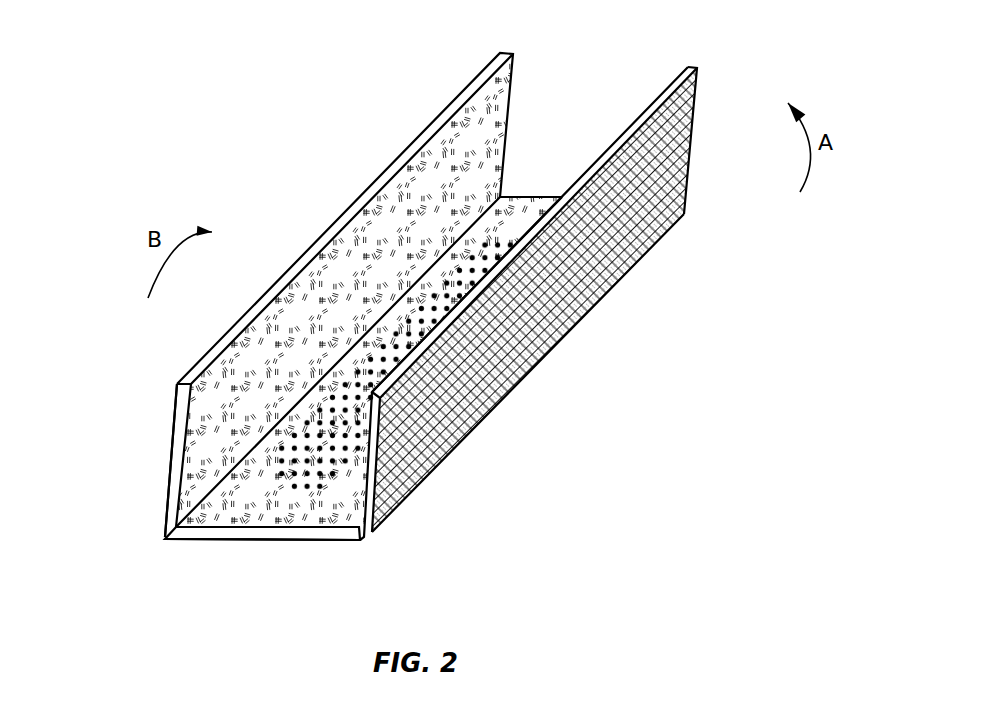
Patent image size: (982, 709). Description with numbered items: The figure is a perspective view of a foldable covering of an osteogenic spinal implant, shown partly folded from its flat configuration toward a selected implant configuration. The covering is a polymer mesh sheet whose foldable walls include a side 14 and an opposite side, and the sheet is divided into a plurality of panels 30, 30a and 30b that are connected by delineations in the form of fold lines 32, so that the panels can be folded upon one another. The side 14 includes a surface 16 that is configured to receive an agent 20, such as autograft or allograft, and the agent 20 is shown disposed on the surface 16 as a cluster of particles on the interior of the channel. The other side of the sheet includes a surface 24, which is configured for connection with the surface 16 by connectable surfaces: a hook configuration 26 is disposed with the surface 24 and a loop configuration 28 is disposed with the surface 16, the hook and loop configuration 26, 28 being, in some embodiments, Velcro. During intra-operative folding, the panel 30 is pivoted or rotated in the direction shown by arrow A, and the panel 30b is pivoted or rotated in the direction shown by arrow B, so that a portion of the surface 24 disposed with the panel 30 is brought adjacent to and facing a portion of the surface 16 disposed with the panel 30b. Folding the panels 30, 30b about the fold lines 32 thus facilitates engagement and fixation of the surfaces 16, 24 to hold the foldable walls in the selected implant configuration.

The side 14 is at (487, 110).
The surface 16 is at (347, 503).
The agent 20 is at (305, 488).
The surface 24 is at (625, 242).
The hook configuration 26 is at (682, 118).
The loop configuration 28 is at (443, 148).
The panel 30 is at (673, 177).
The panel 30a is at (198, 543).
The panel 30b is at (173, 451).
The fold lines 32 is at (504, 399).